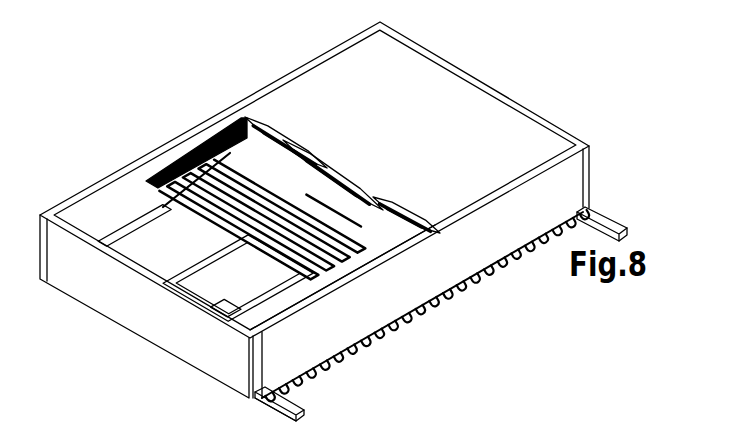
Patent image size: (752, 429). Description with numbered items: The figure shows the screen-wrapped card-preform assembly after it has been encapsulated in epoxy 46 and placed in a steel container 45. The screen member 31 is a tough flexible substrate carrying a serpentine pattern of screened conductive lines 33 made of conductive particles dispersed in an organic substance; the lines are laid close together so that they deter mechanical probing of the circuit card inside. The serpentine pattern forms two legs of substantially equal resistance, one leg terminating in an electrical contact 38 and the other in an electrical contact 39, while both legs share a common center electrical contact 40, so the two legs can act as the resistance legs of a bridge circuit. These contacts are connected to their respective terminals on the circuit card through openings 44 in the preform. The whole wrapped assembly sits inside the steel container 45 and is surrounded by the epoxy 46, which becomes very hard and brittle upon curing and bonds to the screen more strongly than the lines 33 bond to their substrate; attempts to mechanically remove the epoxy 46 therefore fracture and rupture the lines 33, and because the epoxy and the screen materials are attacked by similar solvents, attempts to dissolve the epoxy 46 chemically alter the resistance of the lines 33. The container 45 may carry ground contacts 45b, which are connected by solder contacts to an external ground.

The screen member 31 is at (274, 166).
The conductive lines 33 is at (365, 219).
The electrical contact 38 is at (307, 273).
The electrical contact 39 is at (163, 201).
The common center electrical contact 40 is at (237, 241).
The openings 44 is at (115, 240).
The steel container 45 is at (572, 187).
The ground contacts 45b is at (296, 404).
The epoxy 46 is at (334, 168).